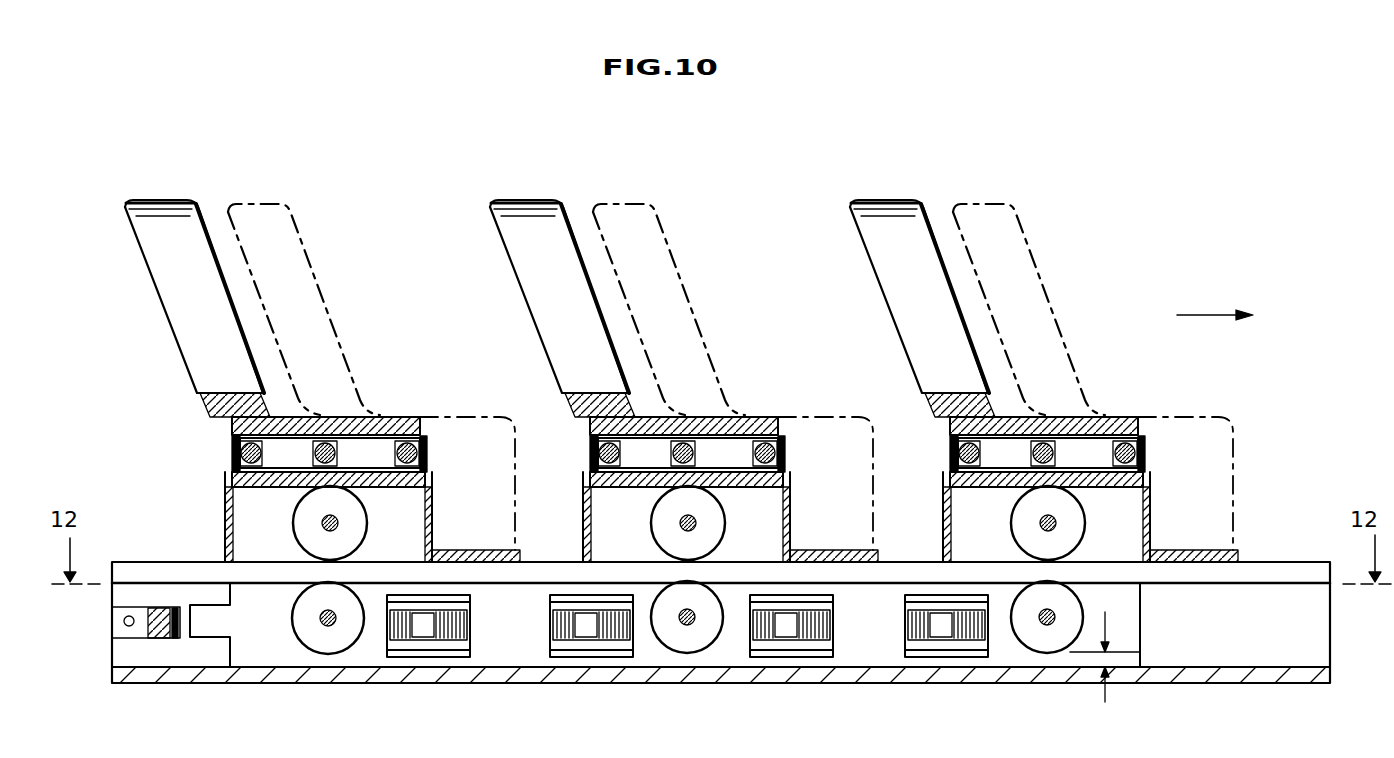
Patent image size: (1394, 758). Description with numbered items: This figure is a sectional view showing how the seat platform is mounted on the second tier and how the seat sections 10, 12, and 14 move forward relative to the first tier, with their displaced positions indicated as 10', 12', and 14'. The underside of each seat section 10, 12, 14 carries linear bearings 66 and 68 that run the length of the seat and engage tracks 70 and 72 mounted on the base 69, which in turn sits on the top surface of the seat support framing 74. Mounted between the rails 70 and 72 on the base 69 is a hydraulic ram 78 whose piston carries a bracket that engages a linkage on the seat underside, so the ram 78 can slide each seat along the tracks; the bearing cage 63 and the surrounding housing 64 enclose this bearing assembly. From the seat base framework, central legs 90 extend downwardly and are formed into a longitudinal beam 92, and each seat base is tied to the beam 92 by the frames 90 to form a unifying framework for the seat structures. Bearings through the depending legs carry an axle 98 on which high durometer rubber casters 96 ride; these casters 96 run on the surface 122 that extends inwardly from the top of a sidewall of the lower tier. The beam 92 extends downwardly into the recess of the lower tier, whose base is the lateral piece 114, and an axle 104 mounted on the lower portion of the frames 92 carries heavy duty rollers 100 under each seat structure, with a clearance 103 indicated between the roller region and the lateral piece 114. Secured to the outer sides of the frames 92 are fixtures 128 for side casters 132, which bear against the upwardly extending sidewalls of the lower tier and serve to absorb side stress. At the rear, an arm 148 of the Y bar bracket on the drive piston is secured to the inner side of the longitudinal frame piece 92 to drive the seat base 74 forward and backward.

The seat section 10 is at (922, 294).
The seat section 12 is at (562, 294).
The seat section 14 is at (197, 294).
The key in displaced position 10' is at (1029, 293).
The key in displaced position 12' is at (669, 293).
The key in displaced position 14' is at (304, 293).
The roller cage frame 63 is at (240, 447).
The key housing 64 is at (404, 428).
The linear bearing 66 is at (233, 470).
The linear bearing 68 is at (386, 466).
The base 69 is at (428, 473).
The track 70 is at (240, 456).
The track 72 is at (421, 452).
The seat support framing 74 is at (284, 489).
The hydraulic ram 78 is at (343, 420).
The central leg 90 is at (408, 535).
The longitudinal beam 92 is at (305, 657).
The caster 96 is at (361, 525).
The axle 98 is at (325, 525).
The heavy duty roller 100 is at (306, 632).
The clearance gap 103 is at (1143, 653).
The axle 104 is at (332, 628).
The lateral piece 114 is at (1273, 665).
The surface 122 is at (190, 561).
The fixture 128 is at (550, 603).
The side caster 132 is at (550, 630).
The arm 148 is at (212, 623).